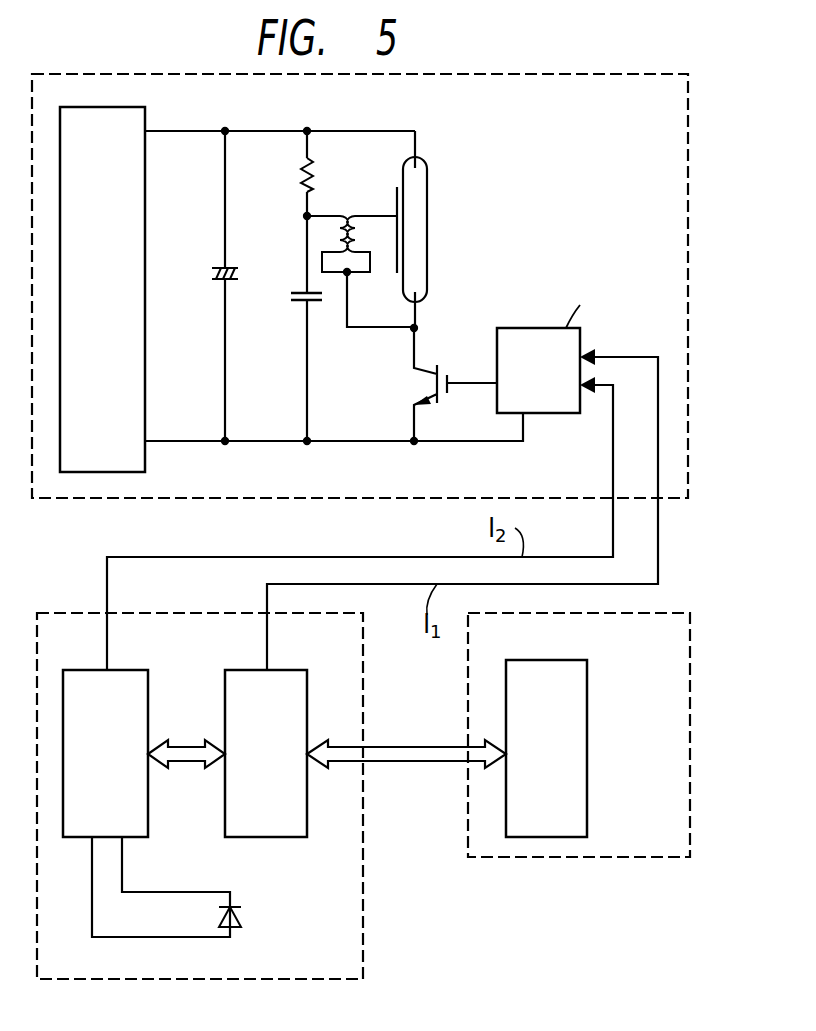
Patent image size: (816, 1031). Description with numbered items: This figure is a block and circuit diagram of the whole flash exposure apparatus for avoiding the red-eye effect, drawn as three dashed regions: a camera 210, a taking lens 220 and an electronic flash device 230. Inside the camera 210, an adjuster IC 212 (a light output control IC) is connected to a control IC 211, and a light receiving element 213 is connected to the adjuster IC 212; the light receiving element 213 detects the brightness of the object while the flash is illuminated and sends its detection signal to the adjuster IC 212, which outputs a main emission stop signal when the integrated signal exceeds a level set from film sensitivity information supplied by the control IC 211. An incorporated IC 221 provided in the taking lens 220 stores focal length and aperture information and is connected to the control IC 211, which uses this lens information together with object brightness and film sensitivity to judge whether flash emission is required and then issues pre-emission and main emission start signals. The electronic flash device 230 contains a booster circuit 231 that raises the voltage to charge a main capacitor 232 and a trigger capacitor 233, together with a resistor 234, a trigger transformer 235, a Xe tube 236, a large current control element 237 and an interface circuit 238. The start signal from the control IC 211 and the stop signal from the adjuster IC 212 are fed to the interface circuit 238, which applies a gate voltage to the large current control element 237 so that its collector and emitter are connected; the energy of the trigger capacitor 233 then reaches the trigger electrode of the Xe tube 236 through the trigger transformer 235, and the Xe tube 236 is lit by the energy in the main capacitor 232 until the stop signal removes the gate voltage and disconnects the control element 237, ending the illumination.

The electronic flash device 230 is at (628, 74).
The booster circuit 231 is at (147, 116).
The main capacitor 232 is at (233, 266).
The trigger capacitor 233 is at (294, 304).
The resistor 234 is at (300, 178).
The trigger transformer 235 is at (328, 214).
The Xe tube 236 is at (428, 187).
The large current control element 237 is at (424, 368).
The interface circuit 238 is at (537, 328).
The camera 210 is at (364, 955).
The control IC 211 is at (308, 695).
The adjuster IC 212 is at (149, 690).
The light receiving element 213 is at (242, 912).
The taking lens 220 is at (632, 857).
The incorporated IC 221 is at (587, 690).